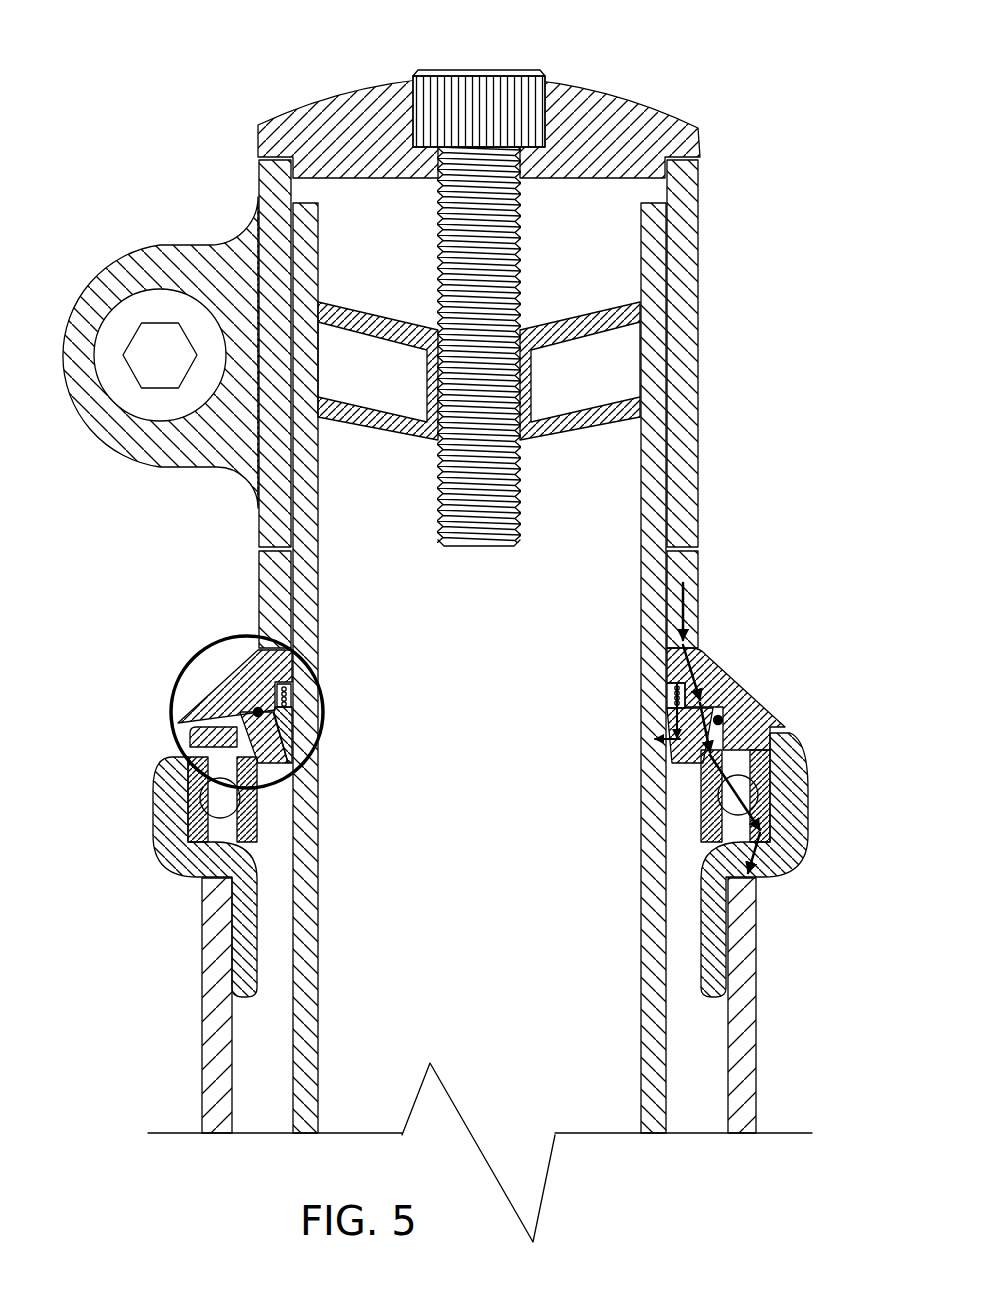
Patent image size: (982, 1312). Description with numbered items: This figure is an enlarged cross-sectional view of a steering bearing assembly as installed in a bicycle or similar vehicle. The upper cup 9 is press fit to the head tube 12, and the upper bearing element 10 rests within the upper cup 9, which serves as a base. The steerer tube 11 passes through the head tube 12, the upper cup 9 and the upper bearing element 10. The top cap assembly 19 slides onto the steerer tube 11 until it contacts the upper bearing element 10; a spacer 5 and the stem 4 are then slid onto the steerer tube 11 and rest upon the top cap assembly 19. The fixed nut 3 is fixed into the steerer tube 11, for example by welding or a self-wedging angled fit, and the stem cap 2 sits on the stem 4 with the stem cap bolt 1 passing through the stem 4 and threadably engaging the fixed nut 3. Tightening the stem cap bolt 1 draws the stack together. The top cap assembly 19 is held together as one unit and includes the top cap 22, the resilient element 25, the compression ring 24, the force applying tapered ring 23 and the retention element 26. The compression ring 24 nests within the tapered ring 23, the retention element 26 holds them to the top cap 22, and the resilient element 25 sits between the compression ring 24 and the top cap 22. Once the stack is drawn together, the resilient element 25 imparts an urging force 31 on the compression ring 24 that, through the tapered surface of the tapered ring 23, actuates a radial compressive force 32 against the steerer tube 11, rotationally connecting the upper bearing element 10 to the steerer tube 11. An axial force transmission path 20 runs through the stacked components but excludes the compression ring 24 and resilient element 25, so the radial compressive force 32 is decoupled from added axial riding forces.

The stem cap bolt 1 is at (497, 85).
The stem cap 2 is at (375, 107).
The fixed nut 3 is at (562, 332).
The stem 4 is at (185, 243).
The spacer 5 is at (268, 593).
The upper cup 9 is at (167, 813).
The upper bearing element 10 is at (262, 785).
The steerer tube 11 is at (312, 947).
The head tube 12 is at (218, 978).
The top cap assembly 19 is at (178, 663).
The axial force transmission path 20 is at (728, 657).
The top cap 22 is at (240, 682).
The force applying tapered ring 23 is at (253, 711).
The compression ring 24 is at (288, 732).
The resilient element 25 is at (290, 690).
The retention element 26 is at (203, 722).
The urging force 31 is at (672, 717).
The radial compressive force 32 is at (660, 770).